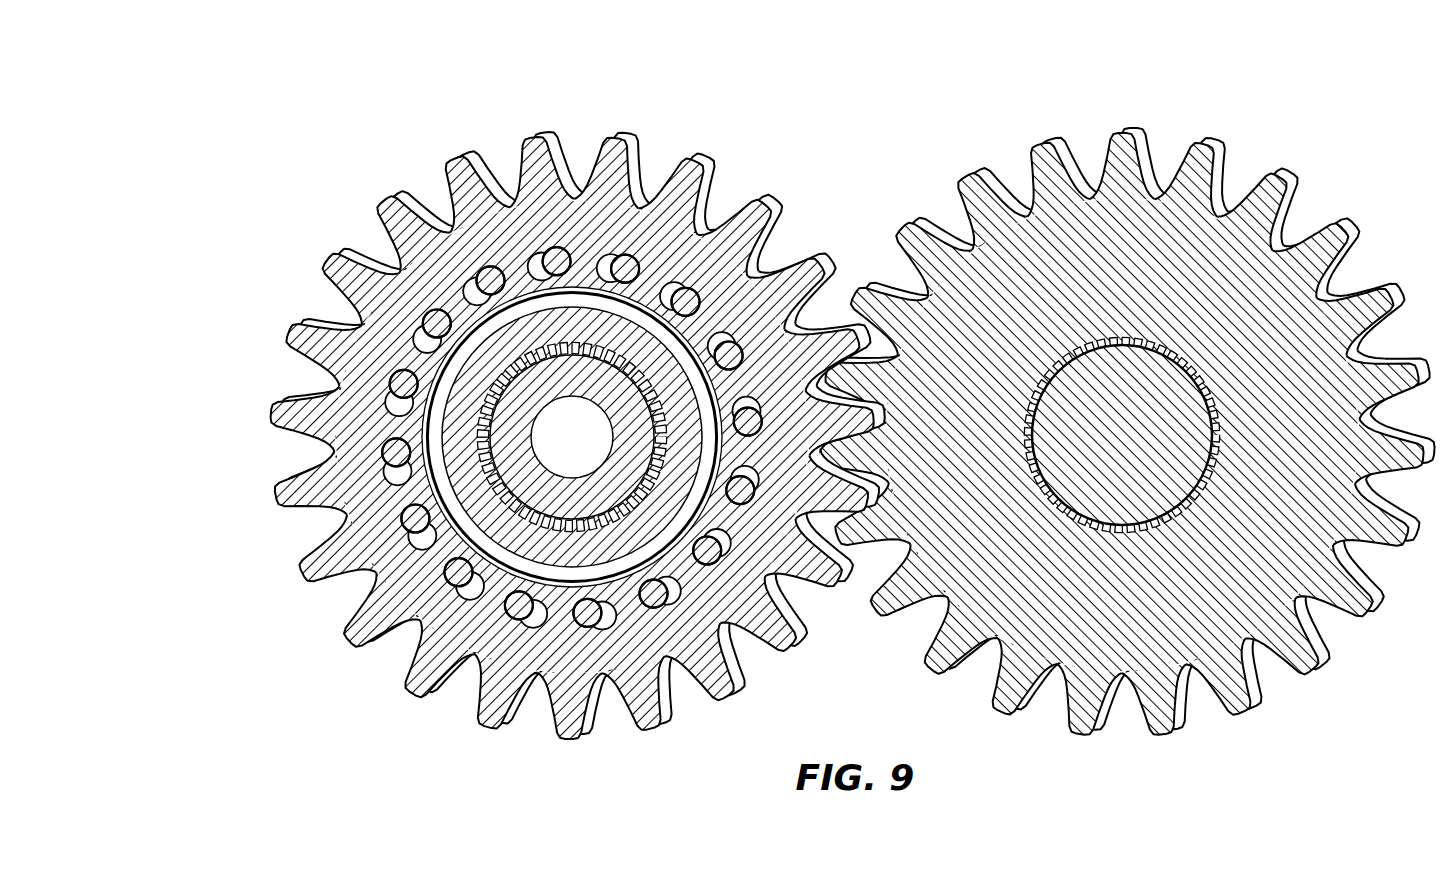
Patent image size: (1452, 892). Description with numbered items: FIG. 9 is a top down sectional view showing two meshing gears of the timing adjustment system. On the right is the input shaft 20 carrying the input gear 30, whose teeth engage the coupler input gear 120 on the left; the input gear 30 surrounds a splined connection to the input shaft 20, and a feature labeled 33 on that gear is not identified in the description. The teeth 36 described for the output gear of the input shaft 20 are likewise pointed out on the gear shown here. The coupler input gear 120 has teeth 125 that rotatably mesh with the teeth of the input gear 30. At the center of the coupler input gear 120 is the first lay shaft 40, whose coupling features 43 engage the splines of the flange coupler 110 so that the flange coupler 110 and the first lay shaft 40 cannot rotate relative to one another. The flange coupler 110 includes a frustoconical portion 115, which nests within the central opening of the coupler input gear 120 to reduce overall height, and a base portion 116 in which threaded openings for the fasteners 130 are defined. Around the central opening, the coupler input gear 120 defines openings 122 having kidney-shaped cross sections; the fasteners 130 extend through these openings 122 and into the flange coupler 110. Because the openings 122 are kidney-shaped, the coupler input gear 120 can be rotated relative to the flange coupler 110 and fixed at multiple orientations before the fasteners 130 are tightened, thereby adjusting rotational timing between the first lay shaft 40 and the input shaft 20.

The input shaft 20 is at (1125, 380).
The input gear 30 is at (1272, 210).
The splines of gear bore 33 is at (1053, 340).
The teeth 36 is at (1392, 292).
The first lay shaft 40 is at (587, 380).
The coupling features 43 is at (645, 378).
The flange coupler 110 is at (503, 522).
The frustoconical portion 115 is at (523, 543).
The base portion 116 is at (547, 572).
The coupler input gear 120 is at (345, 270).
The openings 122 is at (397, 470).
The teeth 125 is at (533, 150).
The fasteners 130 is at (387, 457).